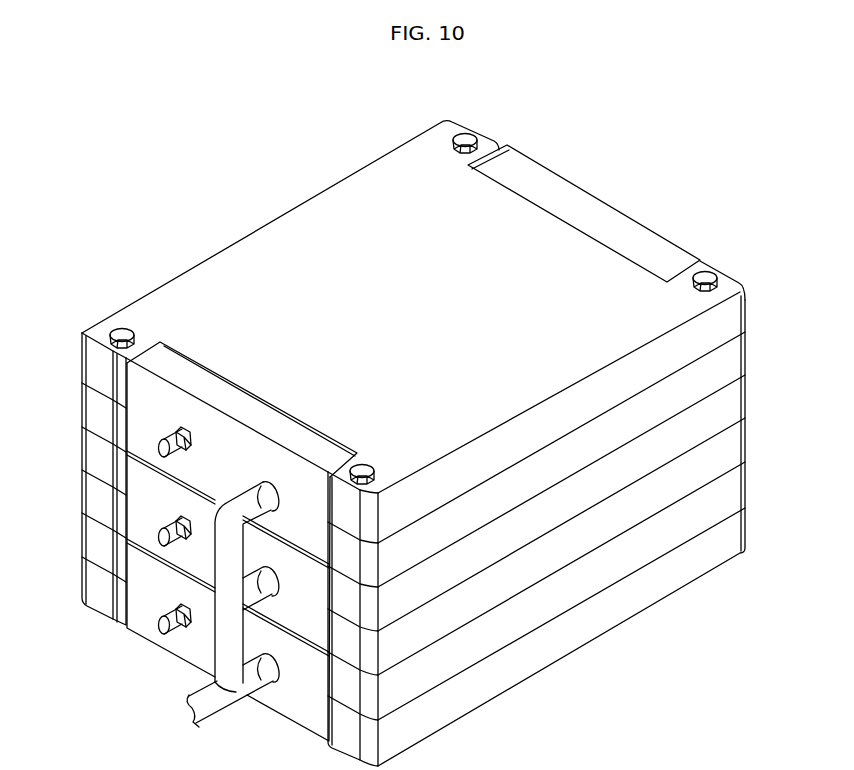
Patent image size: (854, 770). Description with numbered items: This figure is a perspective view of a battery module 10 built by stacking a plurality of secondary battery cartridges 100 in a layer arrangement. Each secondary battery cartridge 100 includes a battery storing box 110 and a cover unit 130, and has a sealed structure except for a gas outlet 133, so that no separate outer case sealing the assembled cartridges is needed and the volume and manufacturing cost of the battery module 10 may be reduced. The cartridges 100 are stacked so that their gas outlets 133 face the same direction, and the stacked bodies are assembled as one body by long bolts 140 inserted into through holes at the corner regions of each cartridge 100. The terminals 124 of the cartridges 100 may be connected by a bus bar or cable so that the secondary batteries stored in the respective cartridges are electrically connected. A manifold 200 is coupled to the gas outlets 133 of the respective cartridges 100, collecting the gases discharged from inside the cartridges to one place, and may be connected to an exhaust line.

The battery module 10 is at (215, 183).
The secondary battery cartridge 100 is at (765, 324).
The battery storing box 110 is at (287, 233).
The terminal 124 is at (158, 452).
The cover unit 130 is at (597, 213).
The gas outlet 133 is at (265, 485).
The long bolt 140 is at (122, 328).
The manifold 200 is at (226, 630).